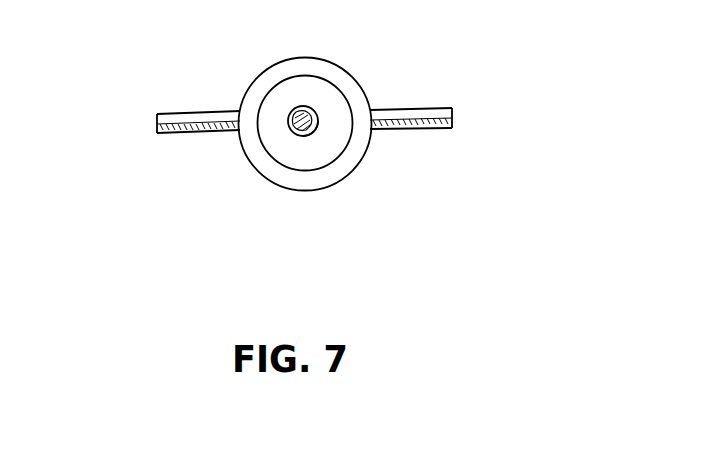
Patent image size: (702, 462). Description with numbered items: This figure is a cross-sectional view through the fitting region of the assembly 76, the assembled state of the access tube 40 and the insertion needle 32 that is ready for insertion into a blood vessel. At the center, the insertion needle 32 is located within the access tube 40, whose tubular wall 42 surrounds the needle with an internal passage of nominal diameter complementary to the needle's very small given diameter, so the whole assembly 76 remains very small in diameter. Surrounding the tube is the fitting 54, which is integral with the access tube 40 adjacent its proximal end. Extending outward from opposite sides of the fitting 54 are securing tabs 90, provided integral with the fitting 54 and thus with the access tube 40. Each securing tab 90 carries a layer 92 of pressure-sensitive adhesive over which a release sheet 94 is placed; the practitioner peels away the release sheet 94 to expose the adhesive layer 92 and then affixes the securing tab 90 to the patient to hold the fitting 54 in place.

The assembly 76 is at (284, 53).
The fitting 54 is at (330, 61).
The tubular wall 42 is at (318, 112).
The insertion needle 32 is at (290, 135).
The access tube 40 is at (318, 132).
The securing tab 90 is at (168, 113).
The adhesive layer 92 is at (157, 128).
The release sheet 94 is at (162, 136).